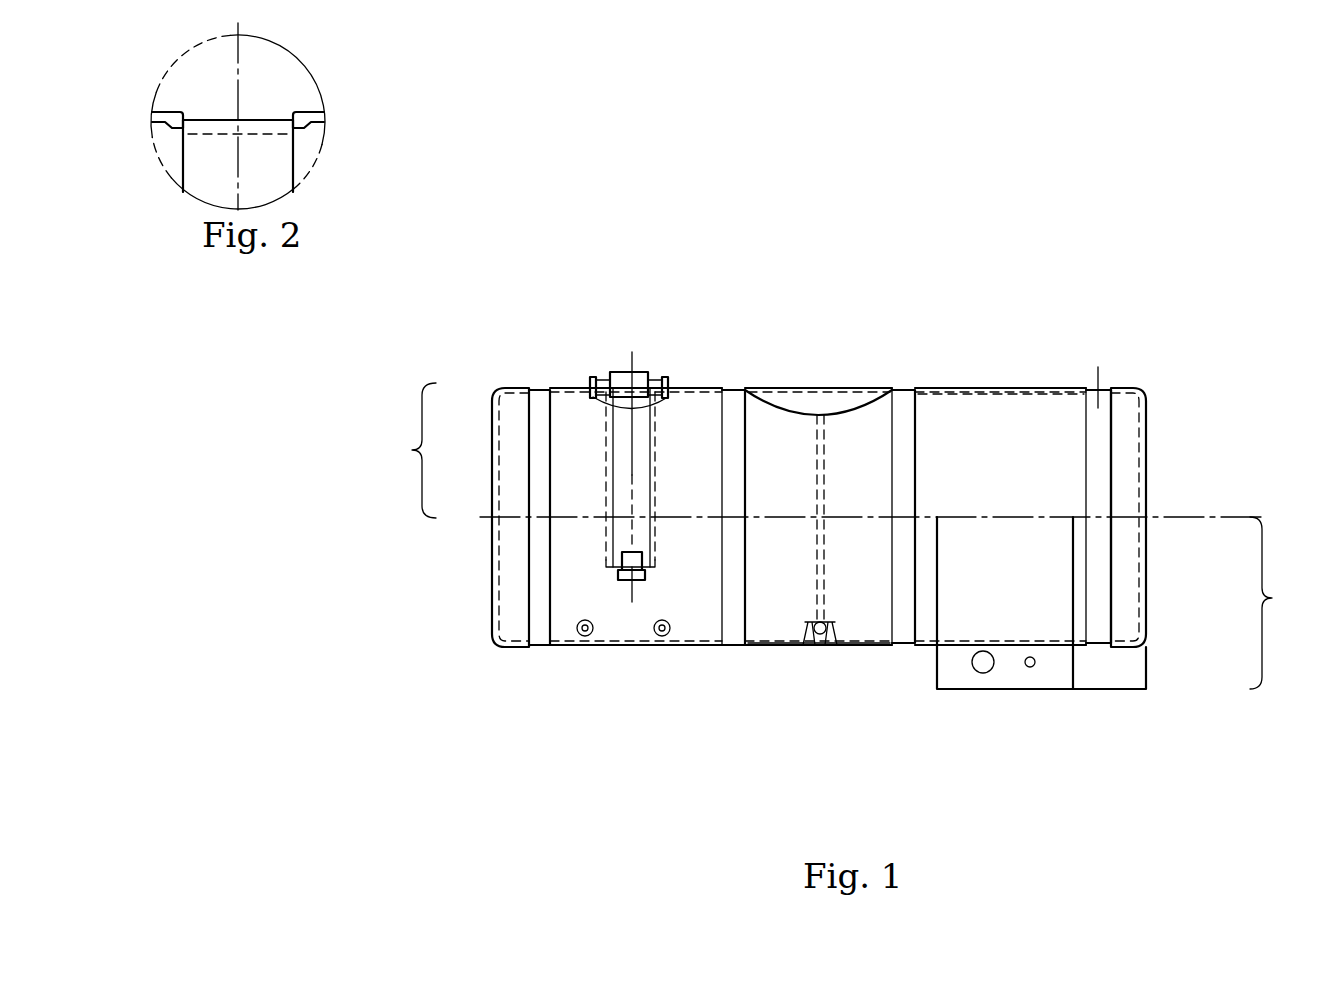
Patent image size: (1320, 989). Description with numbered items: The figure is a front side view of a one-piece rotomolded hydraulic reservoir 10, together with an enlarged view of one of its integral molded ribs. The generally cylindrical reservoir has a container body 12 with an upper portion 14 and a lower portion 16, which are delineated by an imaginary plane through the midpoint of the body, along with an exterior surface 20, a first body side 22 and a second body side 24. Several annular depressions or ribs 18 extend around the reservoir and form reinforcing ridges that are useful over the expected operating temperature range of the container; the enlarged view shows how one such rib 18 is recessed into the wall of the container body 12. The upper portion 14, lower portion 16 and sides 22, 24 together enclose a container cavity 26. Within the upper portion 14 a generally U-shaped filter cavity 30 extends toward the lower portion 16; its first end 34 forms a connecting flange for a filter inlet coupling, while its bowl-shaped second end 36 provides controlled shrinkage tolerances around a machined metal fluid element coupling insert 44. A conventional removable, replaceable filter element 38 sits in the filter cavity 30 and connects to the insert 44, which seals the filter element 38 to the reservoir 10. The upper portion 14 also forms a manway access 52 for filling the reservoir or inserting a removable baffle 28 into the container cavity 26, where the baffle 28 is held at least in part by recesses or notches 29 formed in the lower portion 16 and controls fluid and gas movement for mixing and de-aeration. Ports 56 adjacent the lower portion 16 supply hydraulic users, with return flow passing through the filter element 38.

In FIG. 1, the hydraulic reservoir 10 is at (1138, 305).
In FIG. 2, the container body 12 is at (324, 112).
In FIG. 1, the container body 12 is at (980, 493).
In FIG. 1, the upper portion 14 is at (410, 451).
In FIG. 1, the lower portion 16 is at (1275, 598).
In FIG. 2, the annular depressions or ribs 18 is at (268, 147).
In FIG. 1, the annular depressions or ribs 18 is at (1099, 370).
In FIG. 2, the exterior surface 20 is at (155, 112).
In FIG. 1, the exterior surface 20 is at (767, 630).
In FIG. 1, the first body side 22 is at (1145, 452).
In FIG. 1, the second body side 24 is at (495, 599).
In FIG. 1, the container cavity 26 is at (1072, 440).
In FIG. 1, the removable baffle 28 is at (830, 403).
In FIG. 1, the recesses or notches 29 is at (834, 646).
In FIG. 1, the filter cavity 30 is at (654, 442).
In FIG. 1, the first end 34 is at (590, 384).
In FIG. 1, the second end 36 is at (650, 577).
In FIG. 1, the filter element 38 is at (638, 372).
In FIG. 1, the fluid element coupling insert 44 is at (633, 582).
In FIG. 1, the manway access 52 is at (824, 457).
In FIG. 1, the ports 56 is at (652, 624).